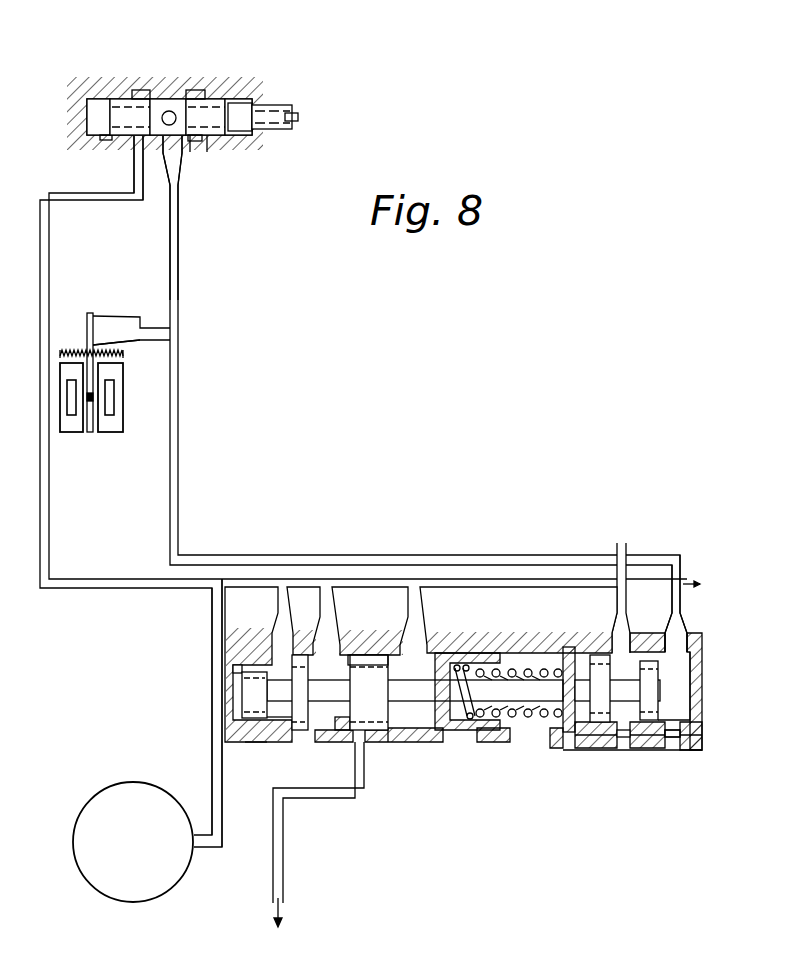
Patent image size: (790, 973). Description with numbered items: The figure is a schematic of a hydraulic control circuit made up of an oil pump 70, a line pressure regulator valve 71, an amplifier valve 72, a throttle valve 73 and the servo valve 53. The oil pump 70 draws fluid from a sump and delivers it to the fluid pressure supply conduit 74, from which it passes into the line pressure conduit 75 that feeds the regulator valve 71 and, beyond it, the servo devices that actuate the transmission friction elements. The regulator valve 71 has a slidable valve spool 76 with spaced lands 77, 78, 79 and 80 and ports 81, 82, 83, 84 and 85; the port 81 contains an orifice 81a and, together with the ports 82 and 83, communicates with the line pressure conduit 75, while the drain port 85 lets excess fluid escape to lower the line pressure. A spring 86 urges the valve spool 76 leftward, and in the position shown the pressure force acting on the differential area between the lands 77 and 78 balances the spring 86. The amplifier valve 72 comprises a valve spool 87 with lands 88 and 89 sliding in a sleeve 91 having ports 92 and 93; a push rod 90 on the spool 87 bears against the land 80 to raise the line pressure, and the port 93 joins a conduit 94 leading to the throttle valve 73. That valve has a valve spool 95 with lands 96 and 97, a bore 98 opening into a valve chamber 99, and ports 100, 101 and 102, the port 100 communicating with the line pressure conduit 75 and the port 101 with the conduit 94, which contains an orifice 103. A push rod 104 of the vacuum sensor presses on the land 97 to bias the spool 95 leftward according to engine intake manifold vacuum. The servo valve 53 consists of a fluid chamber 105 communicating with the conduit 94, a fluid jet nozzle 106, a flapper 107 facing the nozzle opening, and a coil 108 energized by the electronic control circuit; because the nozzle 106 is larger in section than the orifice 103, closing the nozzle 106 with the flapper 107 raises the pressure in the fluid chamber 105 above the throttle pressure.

The servo valve 53 is at (106, 353).
The oil pump 70 is at (147, 851).
The line pressure regulator valve 71 is at (421, 692).
The amplifier valve 72 is at (632, 751).
The throttle valve 73 is at (199, 66).
The fluid pressure supply conduit 74 is at (214, 667).
The line pressure conduit 75 is at (692, 580).
The valve spool 76 is at (410, 715).
The land 77 is at (262, 720).
The land 78 is at (299, 726).
The land 79 is at (373, 735).
The land 80 is at (445, 742).
The port 81 is at (290, 648).
The orifice 81a is at (289, 600).
The port 82 is at (335, 648).
The port 83 is at (430, 648).
The port 84 is at (356, 735).
The drain port 85 is at (461, 752).
The spring 86 is at (522, 668).
The valve spool 87 is at (626, 748).
The land 88 is at (594, 748).
The land 89 is at (658, 704).
The push rod 90 is at (523, 730).
The sleeve 91 is at (690, 744).
The port 92 is at (617, 636).
The port 93 is at (672, 645).
The conduit 94 is at (180, 440).
The valve spool 95 is at (211, 97).
The land 96 is at (123, 97).
The land 97 is at (248, 97).
The bore 98 is at (169, 110).
The valve chamber 99 is at (110, 99).
The port 100 is at (139, 152).
The port 101 is at (178, 160).
The port 102 is at (203, 143).
The orifice 103 is at (178, 190).
The push rod 104 is at (293, 110).
The fluid chamber 105 is at (132, 342).
The fluid jet nozzle 106 is at (100, 318).
The flapper 107 is at (88, 318).
The coil 108 is at (76, 432).